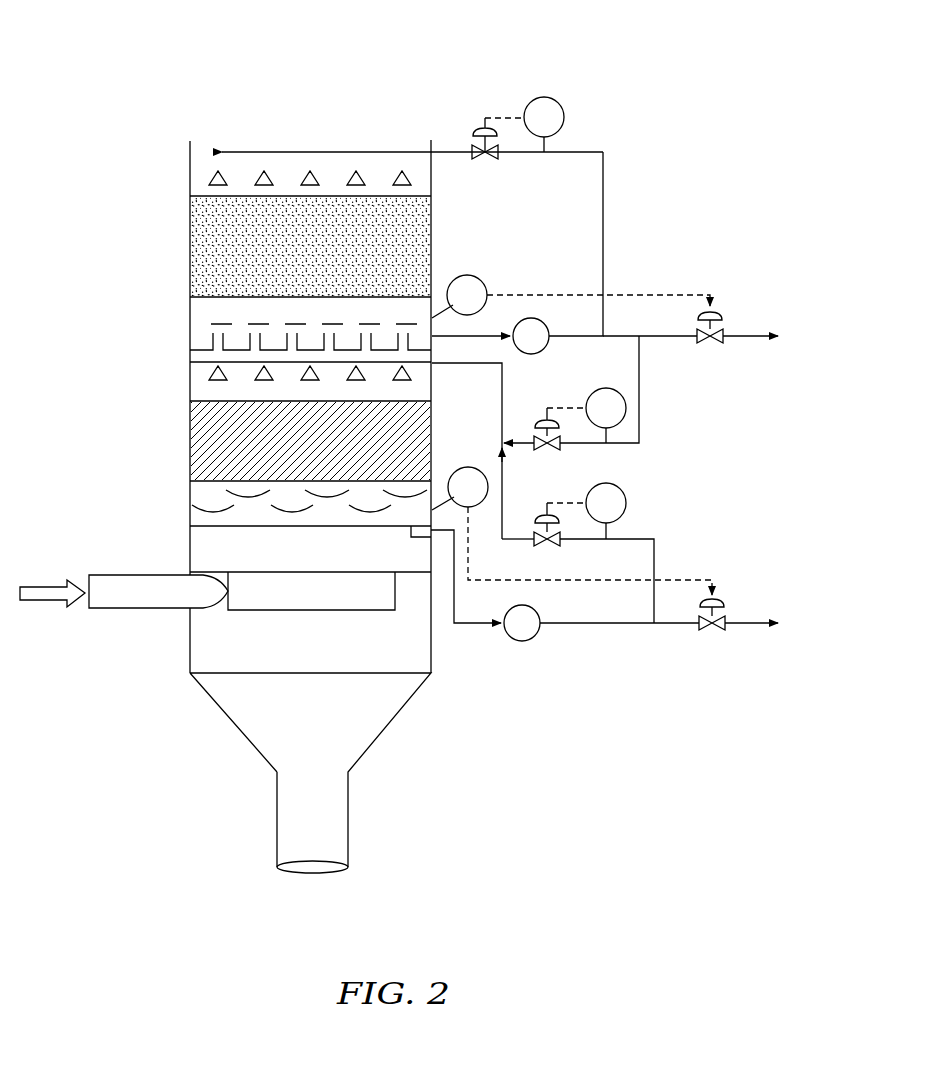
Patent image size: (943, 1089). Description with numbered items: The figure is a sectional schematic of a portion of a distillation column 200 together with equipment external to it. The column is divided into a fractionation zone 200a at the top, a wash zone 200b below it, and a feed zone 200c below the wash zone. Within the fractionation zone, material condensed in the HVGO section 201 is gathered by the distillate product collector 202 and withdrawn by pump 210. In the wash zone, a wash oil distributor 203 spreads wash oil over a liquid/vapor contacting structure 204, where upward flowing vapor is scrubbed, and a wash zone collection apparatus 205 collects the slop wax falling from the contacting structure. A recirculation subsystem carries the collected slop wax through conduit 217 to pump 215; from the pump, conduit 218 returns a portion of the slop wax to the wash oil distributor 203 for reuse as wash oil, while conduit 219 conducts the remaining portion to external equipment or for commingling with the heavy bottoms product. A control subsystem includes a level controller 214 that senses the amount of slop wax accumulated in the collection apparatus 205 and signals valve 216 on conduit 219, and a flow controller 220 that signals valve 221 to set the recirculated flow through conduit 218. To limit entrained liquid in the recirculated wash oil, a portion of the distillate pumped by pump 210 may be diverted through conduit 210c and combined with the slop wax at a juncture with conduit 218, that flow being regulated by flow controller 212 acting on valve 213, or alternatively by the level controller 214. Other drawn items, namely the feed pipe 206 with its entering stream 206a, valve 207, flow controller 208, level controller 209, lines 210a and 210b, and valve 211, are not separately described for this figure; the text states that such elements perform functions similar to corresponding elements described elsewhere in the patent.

The distillation column 200 is at (98, 36).
The fractionation zone 200a is at (131, 170).
The wash zone 200b is at (131, 350).
The feed zone 200c is at (131, 715).
The HVGO section 201 is at (190, 212).
The distillate product collector 202 is at (190, 310).
The wash oil distributor 203 is at (190, 374).
The liquid/vapor contacting structure 204 is at (190, 425).
The wash zone collection apparatus 205 is at (195, 495).
The feed inlet pipe 206 is at (100, 573).
The feed stream 206a is at (46, 586).
The control valve 207 is at (478, 130).
The flow indicator controller 208 is at (559, 103).
The level indicator controller 209 is at (481, 279).
The pump 210 is at (543, 323).
The recycle line 210a is at (605, 195).
The product outlet line 210b is at (770, 320).
The conduit 210c is at (640, 368).
The control valve 211 is at (715, 305).
The flow controller 212 is at (591, 394).
The valve 213 is at (543, 452).
The level controller 214 is at (466, 467).
The pump 215 is at (535, 637).
The valve 216 is at (718, 592).
The conduit 217 is at (455, 558).
The conduit 218 is at (656, 546).
The conduit 219 is at (750, 622).
The flow controller 220 is at (621, 490).
The valve 221 is at (543, 548).